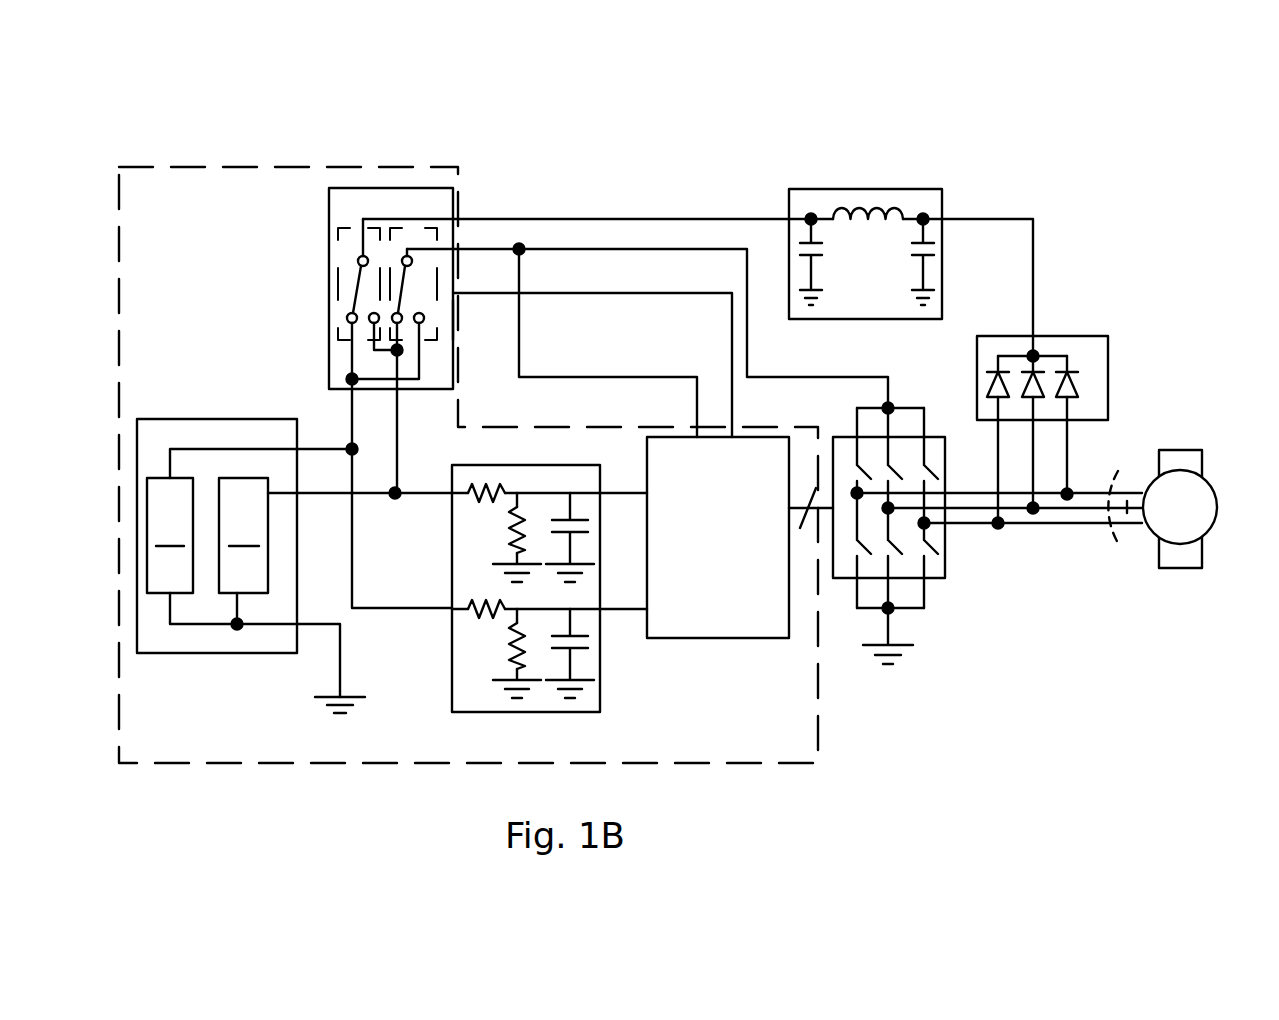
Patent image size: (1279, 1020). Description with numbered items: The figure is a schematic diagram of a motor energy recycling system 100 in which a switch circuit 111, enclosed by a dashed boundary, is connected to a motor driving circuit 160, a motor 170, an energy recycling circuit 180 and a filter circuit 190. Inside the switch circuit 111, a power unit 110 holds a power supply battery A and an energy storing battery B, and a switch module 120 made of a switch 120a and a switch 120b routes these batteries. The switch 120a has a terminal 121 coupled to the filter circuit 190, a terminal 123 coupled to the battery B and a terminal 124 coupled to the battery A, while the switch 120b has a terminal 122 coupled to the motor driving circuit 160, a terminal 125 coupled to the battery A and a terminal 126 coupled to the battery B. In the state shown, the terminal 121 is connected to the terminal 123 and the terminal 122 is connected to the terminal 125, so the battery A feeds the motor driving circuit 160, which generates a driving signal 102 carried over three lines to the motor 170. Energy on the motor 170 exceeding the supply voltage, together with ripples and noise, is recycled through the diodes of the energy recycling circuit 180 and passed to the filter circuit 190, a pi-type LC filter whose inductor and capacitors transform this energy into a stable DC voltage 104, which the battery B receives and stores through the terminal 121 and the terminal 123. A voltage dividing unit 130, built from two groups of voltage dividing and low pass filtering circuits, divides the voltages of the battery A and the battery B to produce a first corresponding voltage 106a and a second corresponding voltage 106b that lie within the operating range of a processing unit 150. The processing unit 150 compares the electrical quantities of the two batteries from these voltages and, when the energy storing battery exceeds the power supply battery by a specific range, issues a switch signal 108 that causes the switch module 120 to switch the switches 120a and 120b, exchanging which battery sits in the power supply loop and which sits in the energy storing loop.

The motor energy recycling system 100 is at (1020, 108).
The driving signal 102 is at (1125, 525).
The DC voltage 104 is at (722, 219).
The first corresponding voltage 106a is at (618, 493).
The second corresponding voltage 106b is at (620, 609).
The switch signal 108 is at (640, 294).
The power unit 110 is at (190, 419).
The switch circuit 111 is at (165, 165).
The switch module 120 is at (340, 190).
The switch 120a is at (347, 227).
The switch 120b is at (428, 227).
The terminal 121 is at (358, 260).
The terminal 122 is at (412, 260).
The terminal 123 is at (347, 318).
The terminal 124 is at (374, 326).
The terminal 125 is at (402, 312).
The terminal 126 is at (455, 327).
The voltage dividing unit 130 is at (600, 688).
The processing unit 150 is at (694, 598).
The motor driving circuit 160 is at (935, 580).
The motor 170 is at (1170, 450).
The energy recycling circuit 180 is at (1050, 336).
The filter circuit 190 is at (863, 189).